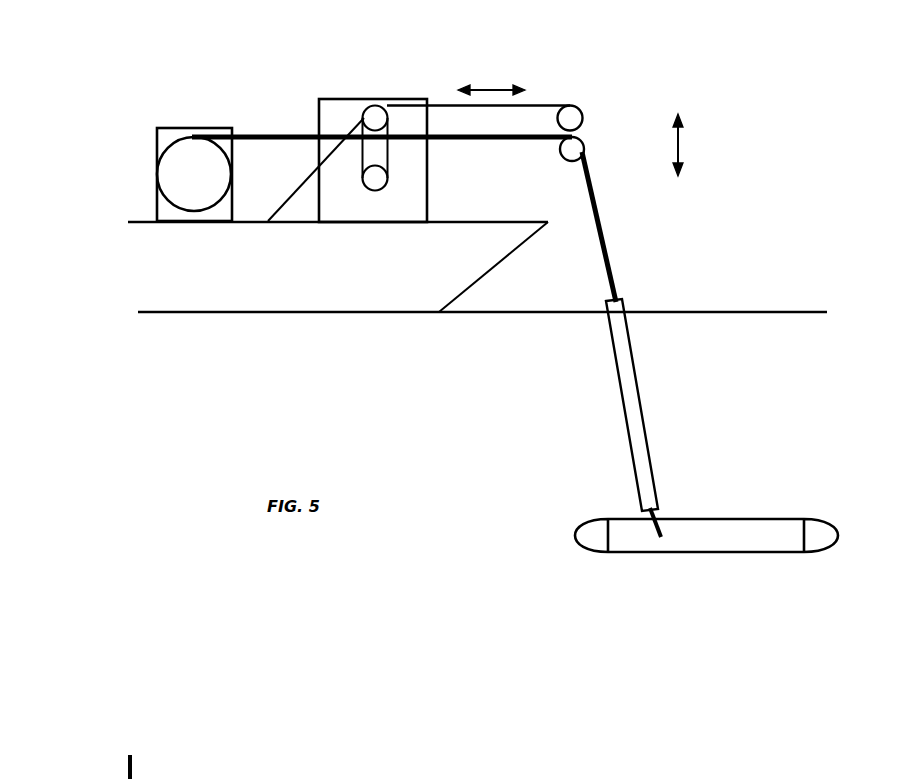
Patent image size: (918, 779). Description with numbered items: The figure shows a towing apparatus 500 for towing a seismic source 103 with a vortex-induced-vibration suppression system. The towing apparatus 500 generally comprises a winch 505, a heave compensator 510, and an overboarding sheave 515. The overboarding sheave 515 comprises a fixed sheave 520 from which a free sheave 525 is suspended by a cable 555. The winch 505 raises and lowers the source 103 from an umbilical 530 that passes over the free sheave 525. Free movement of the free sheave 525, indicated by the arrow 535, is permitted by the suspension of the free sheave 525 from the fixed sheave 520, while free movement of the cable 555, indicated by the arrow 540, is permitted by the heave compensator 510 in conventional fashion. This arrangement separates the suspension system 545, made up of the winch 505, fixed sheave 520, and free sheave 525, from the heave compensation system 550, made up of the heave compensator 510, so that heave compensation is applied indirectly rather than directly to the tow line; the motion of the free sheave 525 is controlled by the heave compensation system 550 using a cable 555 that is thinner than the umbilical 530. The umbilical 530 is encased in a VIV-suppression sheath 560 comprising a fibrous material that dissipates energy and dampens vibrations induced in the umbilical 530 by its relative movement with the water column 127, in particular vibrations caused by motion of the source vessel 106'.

The towing apparatus 500 is at (126, 26).
The suspension system 545 is at (91, 72).
The heave compensation system 550 is at (359, 46).
The winch 505 is at (157, 128).
The heave compensator 510 is at (319, 97).
The cable 555 is at (540, 103).
The arrow 540 is at (487, 82).
The fixed sheave 520 is at (581, 107).
The free sheave 525 is at (559, 160).
The overboarding sheave 515 is at (661, 74).
The arrow 535 is at (683, 150).
The umbilical 530 is at (607, 236).
The VIV-suppression sheath 560 is at (645, 390).
The source vessel 106' is at (314, 215).
The water column 127 is at (282, 408).
The source 103 is at (598, 518).